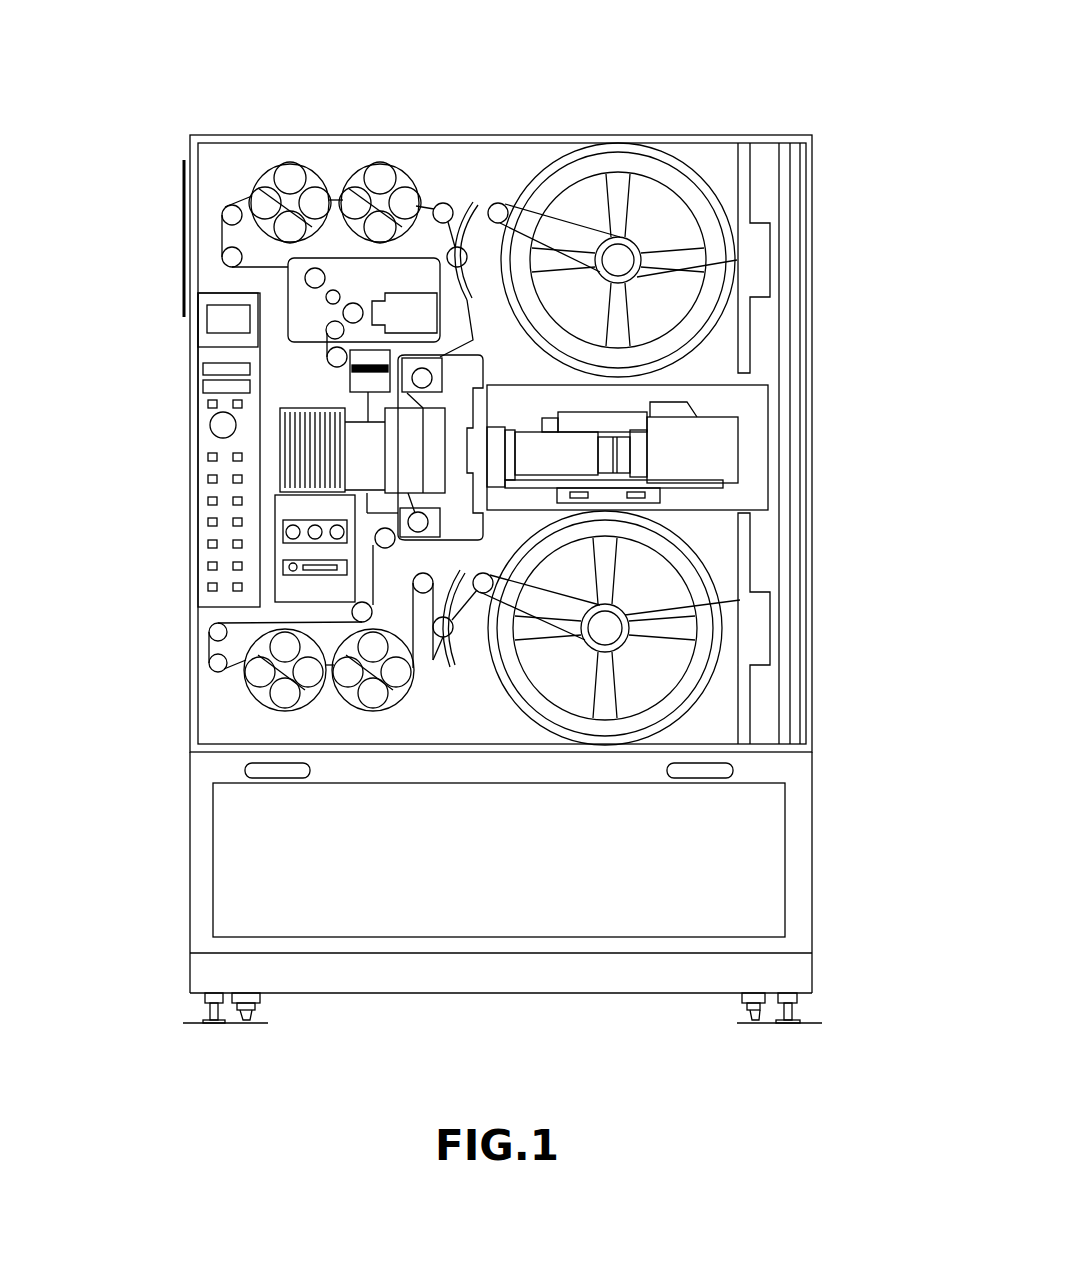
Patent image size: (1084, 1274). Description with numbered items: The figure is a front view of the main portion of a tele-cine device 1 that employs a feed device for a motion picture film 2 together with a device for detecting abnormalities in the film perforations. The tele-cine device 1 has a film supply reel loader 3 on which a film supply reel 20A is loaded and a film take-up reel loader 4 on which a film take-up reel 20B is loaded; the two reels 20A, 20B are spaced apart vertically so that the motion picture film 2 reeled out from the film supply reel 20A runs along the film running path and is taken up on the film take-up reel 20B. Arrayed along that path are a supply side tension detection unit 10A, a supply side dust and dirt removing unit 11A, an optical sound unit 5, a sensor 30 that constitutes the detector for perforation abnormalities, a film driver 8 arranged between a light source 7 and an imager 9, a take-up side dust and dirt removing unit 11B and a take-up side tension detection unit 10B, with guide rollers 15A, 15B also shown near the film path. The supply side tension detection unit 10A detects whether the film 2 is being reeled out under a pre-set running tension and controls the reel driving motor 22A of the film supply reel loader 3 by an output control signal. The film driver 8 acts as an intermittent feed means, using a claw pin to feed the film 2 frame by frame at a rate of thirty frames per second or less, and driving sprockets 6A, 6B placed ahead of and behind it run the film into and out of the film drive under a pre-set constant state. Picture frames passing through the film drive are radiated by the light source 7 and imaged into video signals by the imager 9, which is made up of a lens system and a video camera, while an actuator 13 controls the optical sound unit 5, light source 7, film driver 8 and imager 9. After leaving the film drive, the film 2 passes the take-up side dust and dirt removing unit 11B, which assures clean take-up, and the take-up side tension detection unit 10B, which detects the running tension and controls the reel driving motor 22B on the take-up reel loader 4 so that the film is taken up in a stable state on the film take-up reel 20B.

The tele-cine device 1 is at (813, 121).
The motion picture film 2 is at (218, 237).
The film supply reel loader 3 is at (694, 168).
The film take-up reel loader 4 is at (703, 707).
The optical sound unit 5 is at (285, 292).
The driving sprocket 6A is at (440, 363).
The driving sprocket 6B is at (400, 518).
The light source 7 is at (280, 427).
The film driver 8 is at (403, 452).
The imager 9 is at (718, 448).
The supply side tension detection unit 10A is at (463, 187).
The take-up side tension detection unit 10B is at (441, 670).
The supply side dust and dirt removing unit 11A is at (341, 170).
The take-up side dust and dirt removing unit 11B is at (250, 700).
The actuator 13 is at (287, 590).
The guide roller 15A is at (505, 202).
The guide roller 15B is at (440, 202).
The film supply reel 20A is at (616, 170).
The film take-up reel 20B is at (688, 572).
The reel driving motor 22A is at (625, 262).
The reel driving motor 22B is at (612, 628).
The sensor 30 is at (350, 373).